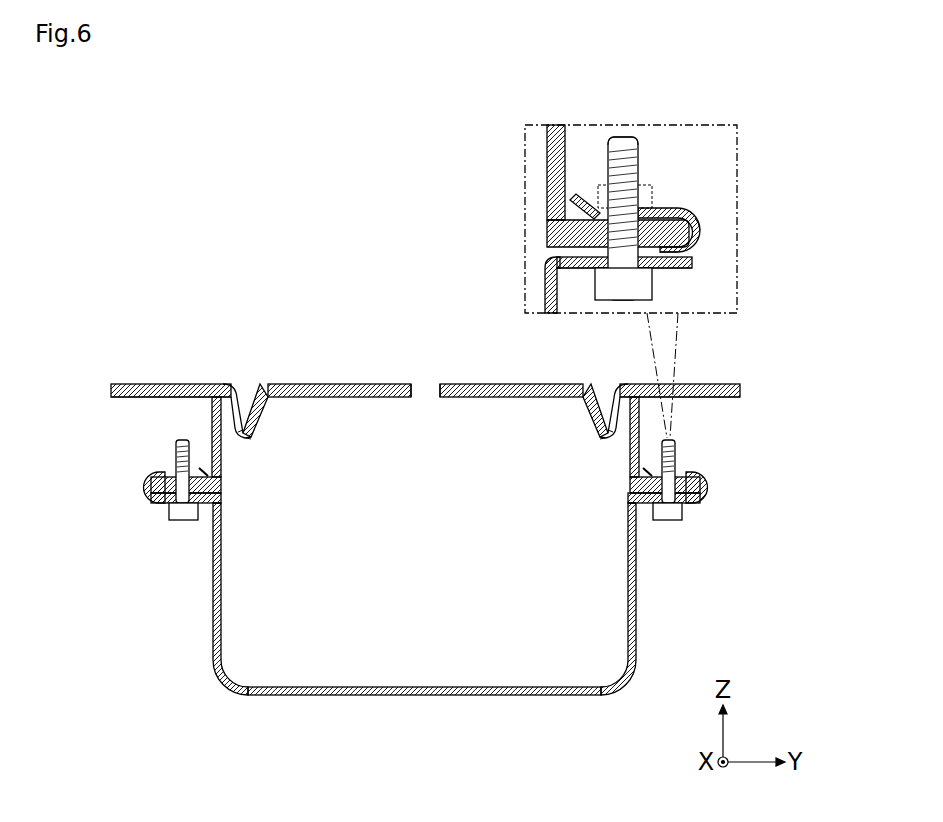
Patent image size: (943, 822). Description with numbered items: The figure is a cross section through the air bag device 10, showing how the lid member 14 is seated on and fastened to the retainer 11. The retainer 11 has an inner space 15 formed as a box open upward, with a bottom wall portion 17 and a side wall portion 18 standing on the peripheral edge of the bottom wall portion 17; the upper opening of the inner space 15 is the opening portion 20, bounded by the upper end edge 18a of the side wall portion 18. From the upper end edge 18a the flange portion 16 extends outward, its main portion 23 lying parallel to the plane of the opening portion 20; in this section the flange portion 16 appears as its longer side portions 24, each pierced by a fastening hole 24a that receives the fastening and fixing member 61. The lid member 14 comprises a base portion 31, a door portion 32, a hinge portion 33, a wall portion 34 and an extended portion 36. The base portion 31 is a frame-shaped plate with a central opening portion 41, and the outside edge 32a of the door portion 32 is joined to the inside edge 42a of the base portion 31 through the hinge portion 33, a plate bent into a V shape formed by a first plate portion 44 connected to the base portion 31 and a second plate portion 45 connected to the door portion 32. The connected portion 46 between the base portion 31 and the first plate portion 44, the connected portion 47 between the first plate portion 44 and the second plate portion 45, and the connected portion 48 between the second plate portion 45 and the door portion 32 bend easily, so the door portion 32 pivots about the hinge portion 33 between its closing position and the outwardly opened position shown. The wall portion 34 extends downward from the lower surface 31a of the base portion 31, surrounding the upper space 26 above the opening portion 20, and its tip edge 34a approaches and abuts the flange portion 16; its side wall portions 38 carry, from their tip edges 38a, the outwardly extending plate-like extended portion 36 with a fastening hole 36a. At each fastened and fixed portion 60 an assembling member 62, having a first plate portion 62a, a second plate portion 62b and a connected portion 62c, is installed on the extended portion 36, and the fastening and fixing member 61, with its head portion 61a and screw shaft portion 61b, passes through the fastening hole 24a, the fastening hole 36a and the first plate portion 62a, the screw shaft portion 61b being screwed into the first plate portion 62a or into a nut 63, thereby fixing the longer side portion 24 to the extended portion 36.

The air bag device 10 is at (328, 288).
The retainer 11 is at (642, 647).
The lid member 14 is at (680, 382).
The inner space 15 is at (424, 726).
The flange portion 16 is at (427, 400).
The bottom wall portion 17 is at (332, 697).
The side wall portion 18 is at (213, 616).
The upper end edge of side wall portion 18a is at (222, 506).
The opening portion 20 is at (356, 500).
The main portion 23 is at (150, 500).
The longer side portion 24 is at (700, 500).
The fastening hole 24a is at (590, 270).
The upper space 26 is at (408, 460).
The base portion 31 is at (111, 392).
The lower surface of base portion 31a is at (140, 398).
The door portion 32 is at (318, 384).
The outside edge of door portion 32a is at (262, 392).
The hinge portion 33 is at (322, 420).
The wall portion 34 is at (425, 378).
The tip edge of wall portion 34a is at (425, 515).
The extended portion 36 is at (150, 478).
The fastening hole of extended portion 36a is at (556, 225).
The side wall portion of wall portion 38 is at (222, 485).
The tip edge of side wall portion 38a is at (223, 496).
The opening portion of base portion 41 is at (428, 470).
The inside edge 42a is at (230, 410).
The first plate portion 44 is at (252, 425).
The second plate portion 45 is at (252, 438).
The connected portion 46 is at (243, 420).
The connected portion 47 is at (212, 445).
The connected portion 48 is at (247, 438).
The fastened and fixed portion 60 is at (156, 524).
The fastening and fixing member 61 is at (496, 336).
The head portion 61a is at (648, 300).
The screw shaft portion 61b is at (630, 150).
The assembling member 62 is at (150, 492).
The first plate portion of assembling member 62a is at (665, 208).
The second plate portion of assembling member 62b is at (685, 253).
The connected portion of assembling member 62c is at (700, 230).
The nut 63 is at (582, 200).